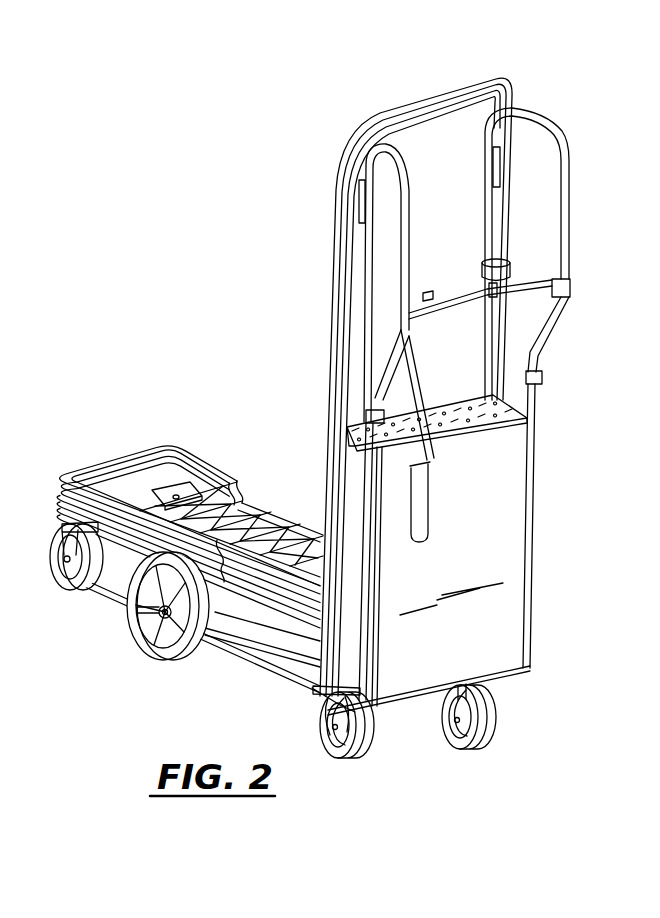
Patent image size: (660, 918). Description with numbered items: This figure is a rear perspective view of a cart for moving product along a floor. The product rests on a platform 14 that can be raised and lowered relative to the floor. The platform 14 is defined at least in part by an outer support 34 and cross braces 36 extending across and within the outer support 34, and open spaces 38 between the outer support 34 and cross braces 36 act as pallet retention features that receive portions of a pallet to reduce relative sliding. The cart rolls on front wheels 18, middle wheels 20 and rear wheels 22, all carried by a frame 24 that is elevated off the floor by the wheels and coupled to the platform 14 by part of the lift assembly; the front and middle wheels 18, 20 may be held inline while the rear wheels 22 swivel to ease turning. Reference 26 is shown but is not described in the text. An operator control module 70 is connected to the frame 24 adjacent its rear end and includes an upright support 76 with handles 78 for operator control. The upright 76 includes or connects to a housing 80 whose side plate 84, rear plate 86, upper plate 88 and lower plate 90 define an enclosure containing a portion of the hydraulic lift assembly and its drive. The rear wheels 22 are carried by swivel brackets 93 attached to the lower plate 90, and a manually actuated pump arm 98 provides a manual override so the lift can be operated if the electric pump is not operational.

The platform 14 is at (184, 544).
The front wheels 18 is at (88, 586).
The middle wheels 20 is at (141, 632).
The rear wheels 22 is at (372, 732).
The frame 24 is at (231, 646).
The side rail 26 is at (267, 653).
The outer support 34 is at (156, 457).
The cross braces 36 is at (308, 553).
The open spaces 38 is at (112, 480).
The operator control module 70 is at (440, 405).
The upright support 76 is at (415, 110).
The handles 78 is at (406, 241).
The housing 80 is at (527, 642).
The side plate 84 is at (323, 686).
The rear plate 86 is at (503, 540).
The upper plate 88 is at (487, 417).
The lower plate 90 is at (527, 670).
The swivel brackets 93 is at (343, 740).
The manually actuated pump arm 98 is at (427, 473).